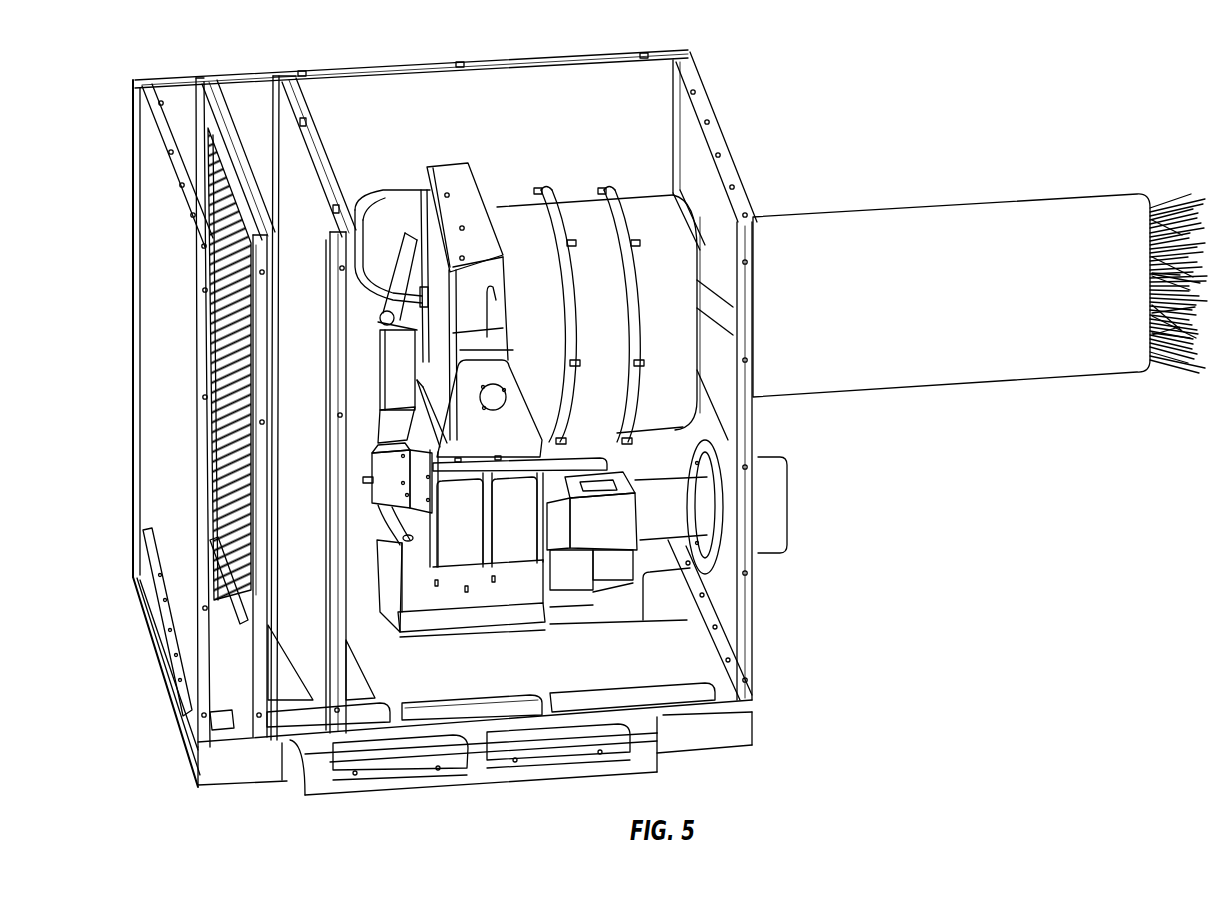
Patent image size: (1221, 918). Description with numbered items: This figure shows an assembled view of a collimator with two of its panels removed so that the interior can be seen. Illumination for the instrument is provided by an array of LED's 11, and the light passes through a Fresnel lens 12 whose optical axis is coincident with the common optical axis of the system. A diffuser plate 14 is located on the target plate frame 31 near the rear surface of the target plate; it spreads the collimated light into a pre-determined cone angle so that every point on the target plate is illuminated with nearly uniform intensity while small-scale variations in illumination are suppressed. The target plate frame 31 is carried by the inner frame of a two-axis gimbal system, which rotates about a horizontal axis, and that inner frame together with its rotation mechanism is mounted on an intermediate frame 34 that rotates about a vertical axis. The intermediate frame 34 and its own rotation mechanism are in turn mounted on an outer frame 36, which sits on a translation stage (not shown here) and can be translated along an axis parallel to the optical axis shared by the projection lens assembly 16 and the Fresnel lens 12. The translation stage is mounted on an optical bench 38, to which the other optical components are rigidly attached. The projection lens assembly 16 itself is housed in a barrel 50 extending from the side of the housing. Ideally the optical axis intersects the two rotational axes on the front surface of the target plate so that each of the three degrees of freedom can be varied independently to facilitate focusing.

The array of LED's 11 is at (205, 82).
The Fresnel lens 12 is at (277, 130).
The diffuser plate 14 is at (430, 247).
The target plate frame 31 is at (478, 177).
The projection lens assembly 16 is at (871, 214).
The barrel 50 is at (990, 380).
The intermediate frame 34 is at (507, 417).
The outer frame 36 is at (513, 585).
The optical bench 38 is at (580, 667).